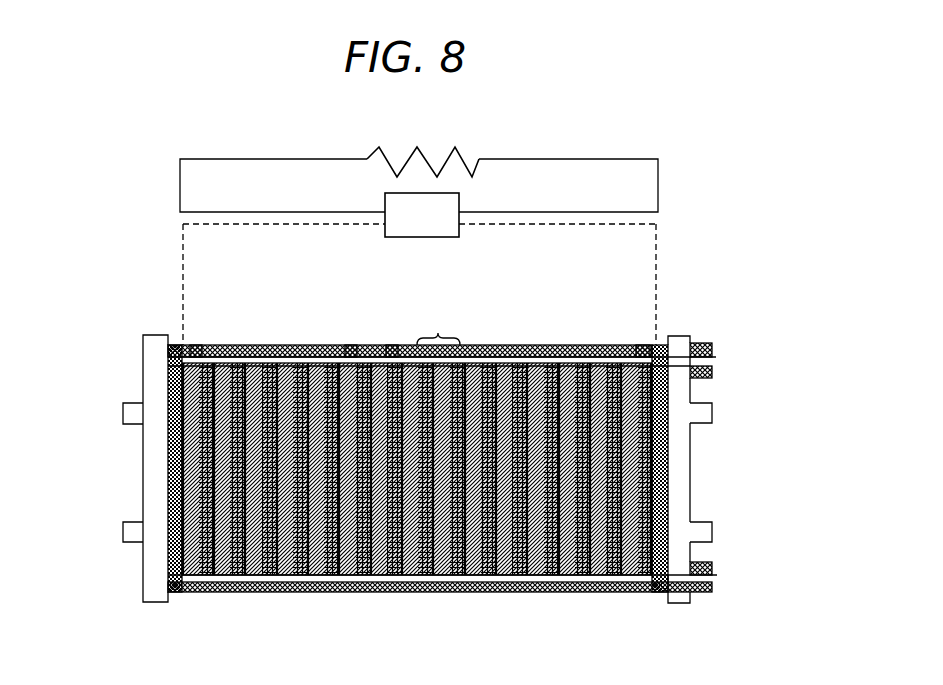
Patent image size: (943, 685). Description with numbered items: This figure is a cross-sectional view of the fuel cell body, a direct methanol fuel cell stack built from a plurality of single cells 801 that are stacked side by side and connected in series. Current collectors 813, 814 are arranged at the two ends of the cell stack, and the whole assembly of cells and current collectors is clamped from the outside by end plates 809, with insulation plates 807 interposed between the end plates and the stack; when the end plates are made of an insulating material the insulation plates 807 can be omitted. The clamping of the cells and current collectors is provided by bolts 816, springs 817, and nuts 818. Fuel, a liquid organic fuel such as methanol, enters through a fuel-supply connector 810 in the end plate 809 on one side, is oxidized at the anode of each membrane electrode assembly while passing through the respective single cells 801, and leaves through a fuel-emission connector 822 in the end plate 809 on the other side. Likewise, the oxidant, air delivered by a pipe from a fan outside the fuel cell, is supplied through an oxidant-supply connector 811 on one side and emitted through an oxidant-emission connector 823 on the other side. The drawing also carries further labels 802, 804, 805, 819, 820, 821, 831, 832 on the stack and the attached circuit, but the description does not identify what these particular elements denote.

The single cell 801 is at (438, 325).
The electrode stack body 802 is at (442, 388).
The separator 804 is at (352, 346).
The upper current collecting plate 805 is at (365, 346).
The insulation plate 807 is at (168, 378).
The end plate 809 is at (155, 596).
The fuel-supply connector 810 is at (123, 412).
The oxidant-supply connector 811 is at (123, 532).
The current collector 813 is at (178, 333).
The current collector 814 is at (660, 334).
The bolt 816 is at (716, 358).
The spring 817 is at (712, 343).
The nut 818 is at (712, 375).
The wiring (dashed) 819 is at (183, 254).
The control unit 820 is at (422, 215).
The load resistor 821 is at (423, 149).
The fuel-emission connector 822 is at (712, 532).
The oxidant-emission connector 823 is at (712, 415).
The left electrode lead 831 is at (198, 346).
The right electrode lead 832 is at (643, 352).